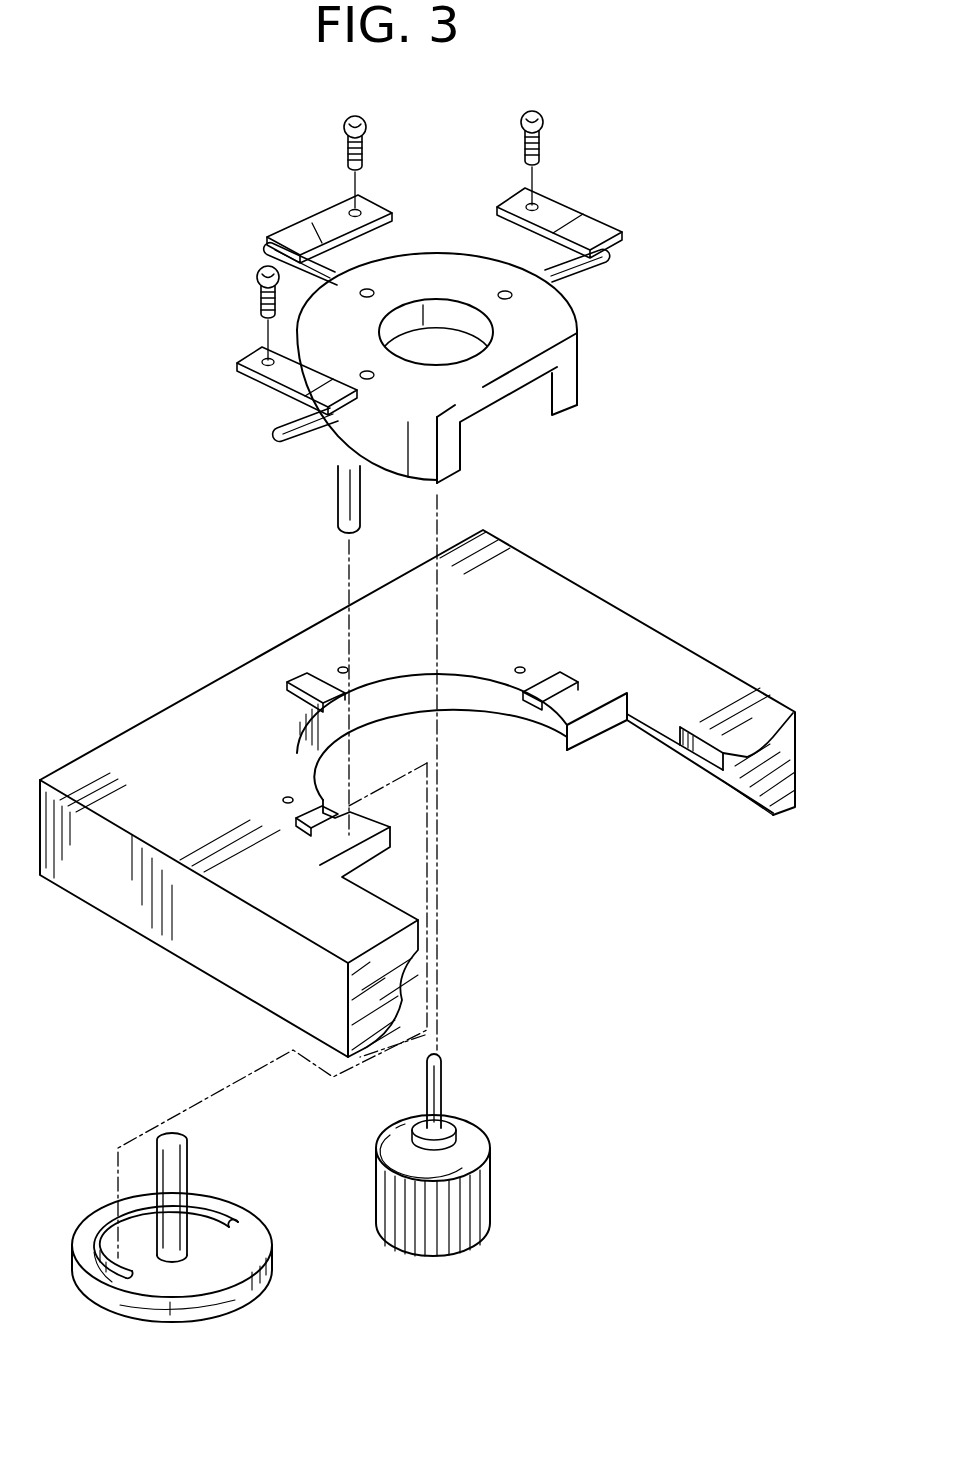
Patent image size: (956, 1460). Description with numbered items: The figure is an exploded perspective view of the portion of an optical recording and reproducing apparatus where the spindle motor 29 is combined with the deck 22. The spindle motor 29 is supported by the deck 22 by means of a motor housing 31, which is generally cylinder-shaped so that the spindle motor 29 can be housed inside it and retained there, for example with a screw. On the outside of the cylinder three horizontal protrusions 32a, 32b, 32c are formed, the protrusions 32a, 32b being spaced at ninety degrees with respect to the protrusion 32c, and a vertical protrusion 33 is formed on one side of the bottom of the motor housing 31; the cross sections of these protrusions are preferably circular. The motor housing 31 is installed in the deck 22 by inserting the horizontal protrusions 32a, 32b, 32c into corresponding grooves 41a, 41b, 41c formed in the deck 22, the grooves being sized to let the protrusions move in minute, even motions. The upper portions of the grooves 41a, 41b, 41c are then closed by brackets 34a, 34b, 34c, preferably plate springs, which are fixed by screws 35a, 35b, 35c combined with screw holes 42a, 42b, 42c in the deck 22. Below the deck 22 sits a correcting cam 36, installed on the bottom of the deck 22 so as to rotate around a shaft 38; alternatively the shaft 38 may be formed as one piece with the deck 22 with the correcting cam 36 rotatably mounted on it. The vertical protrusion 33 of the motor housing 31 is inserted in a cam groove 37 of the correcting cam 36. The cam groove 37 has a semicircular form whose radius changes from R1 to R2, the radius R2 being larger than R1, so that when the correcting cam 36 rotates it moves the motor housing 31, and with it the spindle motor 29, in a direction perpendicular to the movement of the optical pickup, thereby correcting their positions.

The deck 22 is at (722, 742).
The spindle motor 29 is at (490, 1145).
The motor housing 31 is at (560, 418).
The horizontal protrusion 32a is at (590, 275).
The horizontal protrusion 32b is at (283, 445).
The horizontal protrusion 32c is at (267, 250).
The vertical protrusion 33 is at (338, 530).
The bracket 34a is at (590, 232).
The bracket 34b is at (268, 390).
The bracket 34c is at (298, 232).
The screw 35a is at (541, 142).
The screw 35b is at (257, 297).
The screw 35c is at (346, 135).
The correcting cam 36 is at (250, 1265).
The cam groove 37 is at (92, 1242).
The shaft 38 is at (183, 1165).
The groove 41a is at (560, 680).
The groove 41b is at (298, 816).
The groove 41c is at (308, 680).
The screw hole 42a is at (518, 667).
The screw hole 42b is at (286, 797).
The screw hole 42c is at (342, 667).
The radius R1 is at (172, 1255).
The radius R2 is at (232, 1222).